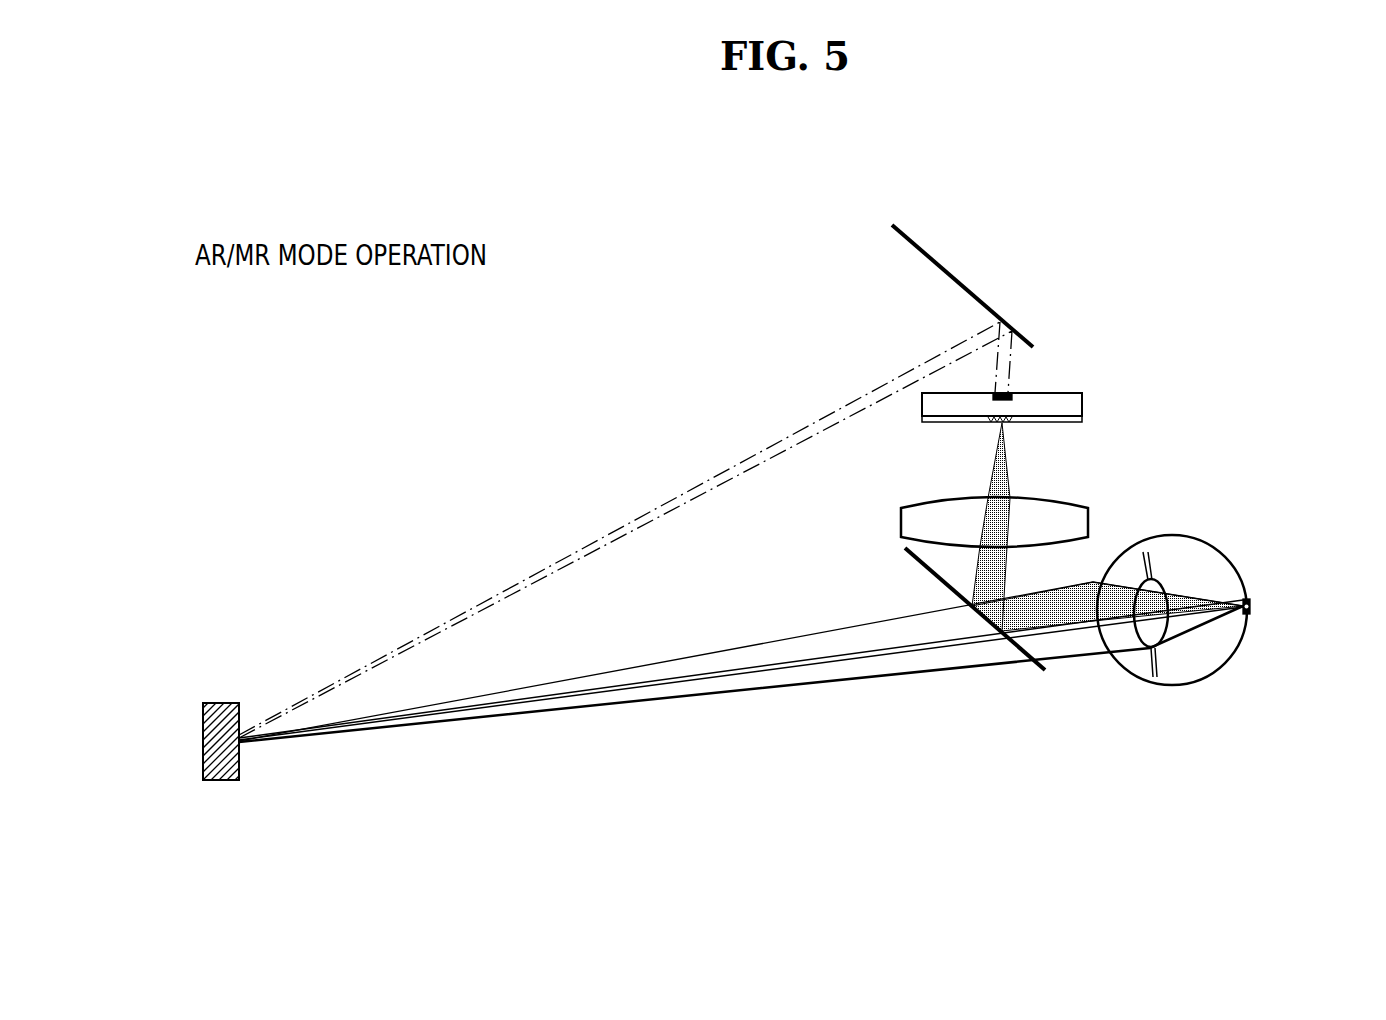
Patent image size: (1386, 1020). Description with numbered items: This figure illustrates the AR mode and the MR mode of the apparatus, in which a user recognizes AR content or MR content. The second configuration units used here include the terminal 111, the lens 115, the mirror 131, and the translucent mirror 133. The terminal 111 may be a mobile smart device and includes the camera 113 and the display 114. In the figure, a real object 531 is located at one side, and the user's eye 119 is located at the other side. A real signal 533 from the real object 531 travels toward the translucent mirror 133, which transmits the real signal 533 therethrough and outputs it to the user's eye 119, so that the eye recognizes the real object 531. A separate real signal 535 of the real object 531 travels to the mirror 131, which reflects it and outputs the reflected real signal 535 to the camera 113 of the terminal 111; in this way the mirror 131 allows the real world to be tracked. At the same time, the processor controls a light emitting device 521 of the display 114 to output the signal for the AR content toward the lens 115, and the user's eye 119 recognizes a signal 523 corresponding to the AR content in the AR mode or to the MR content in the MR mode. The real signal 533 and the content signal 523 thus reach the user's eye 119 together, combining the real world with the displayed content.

The terminal 111 is at (1083, 402).
The camera 113 is at (1015, 392).
The display 114 is at (1083, 417).
The lens 115 is at (901, 522).
The user's eye 119 is at (1223, 657).
The mirror 131 is at (930, 252).
The translucent mirror 133 is at (1037, 665).
The light emitting device 521 is at (1008, 423).
The signal 523 is at (1085, 595).
The real object 531 is at (222, 702).
The real signal 533 is at (770, 687).
The real signal 535 is at (622, 528).